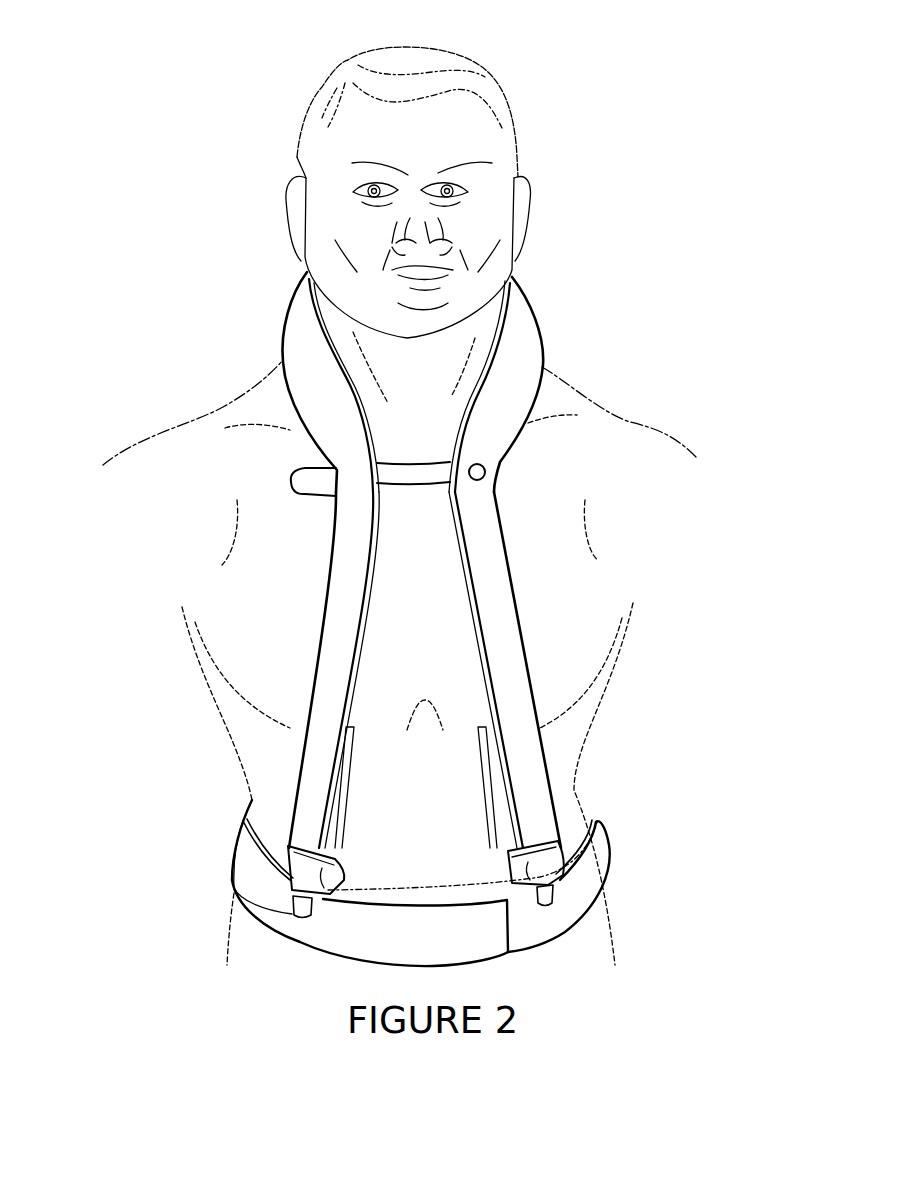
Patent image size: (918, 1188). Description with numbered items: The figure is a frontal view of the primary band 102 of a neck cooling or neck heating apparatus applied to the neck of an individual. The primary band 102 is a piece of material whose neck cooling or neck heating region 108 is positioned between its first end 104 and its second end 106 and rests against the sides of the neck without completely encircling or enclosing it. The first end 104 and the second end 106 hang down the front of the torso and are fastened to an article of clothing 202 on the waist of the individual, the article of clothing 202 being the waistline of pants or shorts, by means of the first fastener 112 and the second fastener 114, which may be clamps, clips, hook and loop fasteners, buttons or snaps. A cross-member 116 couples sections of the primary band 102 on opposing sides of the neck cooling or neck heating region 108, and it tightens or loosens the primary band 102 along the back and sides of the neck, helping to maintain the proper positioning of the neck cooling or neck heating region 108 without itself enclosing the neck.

The primary band 102 is at (333, 580).
The first end 104 is at (548, 862).
The second end 106 is at (293, 868).
The neck cooling or neck heating region 108 is at (285, 313).
The first fastener 112 is at (558, 897).
The second fastener 114 is at (285, 912).
The cross-member 116 is at (297, 460).
The article of clothing 202 is at (365, 940).